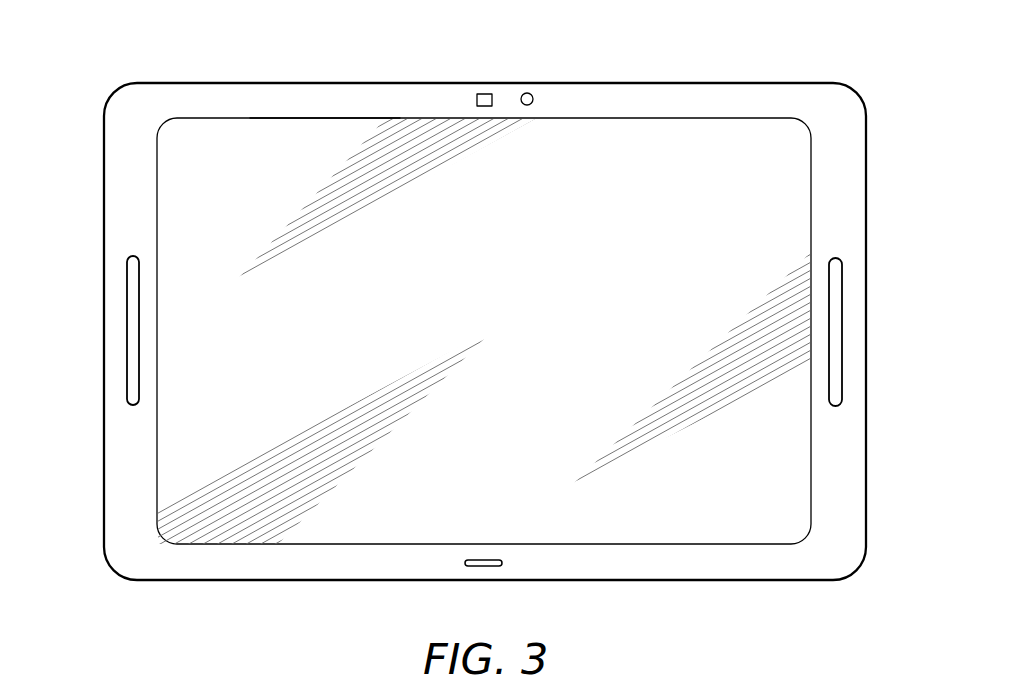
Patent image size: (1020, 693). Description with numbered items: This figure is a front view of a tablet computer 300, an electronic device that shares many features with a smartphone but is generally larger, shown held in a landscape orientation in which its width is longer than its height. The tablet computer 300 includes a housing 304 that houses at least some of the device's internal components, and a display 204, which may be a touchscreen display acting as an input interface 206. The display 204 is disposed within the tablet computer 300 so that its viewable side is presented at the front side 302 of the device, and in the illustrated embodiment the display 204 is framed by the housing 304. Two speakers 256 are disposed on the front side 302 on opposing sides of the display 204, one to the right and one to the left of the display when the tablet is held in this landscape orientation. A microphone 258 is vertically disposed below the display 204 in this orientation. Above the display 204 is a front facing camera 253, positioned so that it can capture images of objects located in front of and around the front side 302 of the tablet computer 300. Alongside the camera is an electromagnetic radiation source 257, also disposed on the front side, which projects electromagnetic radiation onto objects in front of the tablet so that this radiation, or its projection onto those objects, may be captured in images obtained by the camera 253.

The tablet computer 300 is at (789, 75).
The front side 302 is at (115, 438).
The housing 304 is at (104, 189).
The display 204 is at (648, 118).
The input interface 206 is at (318, 118).
The front facing camera 253 is at (484, 94).
The electromagnetic radiation source 257 is at (530, 93).
The speakers 256 is at (127, 330).
The microphone 258 is at (484, 566).